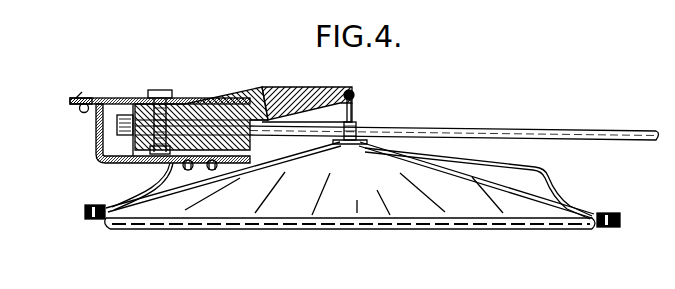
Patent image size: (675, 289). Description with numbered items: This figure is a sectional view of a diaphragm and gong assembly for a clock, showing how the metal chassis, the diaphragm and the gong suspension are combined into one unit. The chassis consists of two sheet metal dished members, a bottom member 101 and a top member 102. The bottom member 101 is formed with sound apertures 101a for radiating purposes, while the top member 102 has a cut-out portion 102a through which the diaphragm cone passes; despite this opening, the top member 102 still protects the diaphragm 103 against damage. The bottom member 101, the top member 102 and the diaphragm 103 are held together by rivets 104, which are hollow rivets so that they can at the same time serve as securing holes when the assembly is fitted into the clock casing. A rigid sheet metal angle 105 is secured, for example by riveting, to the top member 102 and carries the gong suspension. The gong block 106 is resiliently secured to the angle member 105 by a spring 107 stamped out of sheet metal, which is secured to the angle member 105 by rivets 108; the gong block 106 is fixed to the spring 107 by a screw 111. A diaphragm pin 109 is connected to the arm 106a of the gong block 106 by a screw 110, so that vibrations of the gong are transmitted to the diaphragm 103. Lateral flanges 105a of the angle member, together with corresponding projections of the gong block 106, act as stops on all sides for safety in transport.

The bottom member 101 is at (463, 230).
The sound apertures 101a is at (368, 230).
The top member 102 is at (555, 200).
The cut-out portion 102a is at (495, 166).
The diaphragm 103 is at (409, 158).
The rivets 104 is at (85, 218).
The sheet metal angle 105 is at (95, 138).
The lateral flanges 105a is at (142, 162).
The gong block 106 is at (213, 107).
The arm 106a is at (288, 102).
The spring 107 is at (97, 101).
The rivets 108 is at (83, 98).
The diaphragm pin 109 is at (355, 133).
The screw 110 is at (348, 87).
The screw 111 is at (151, 89).